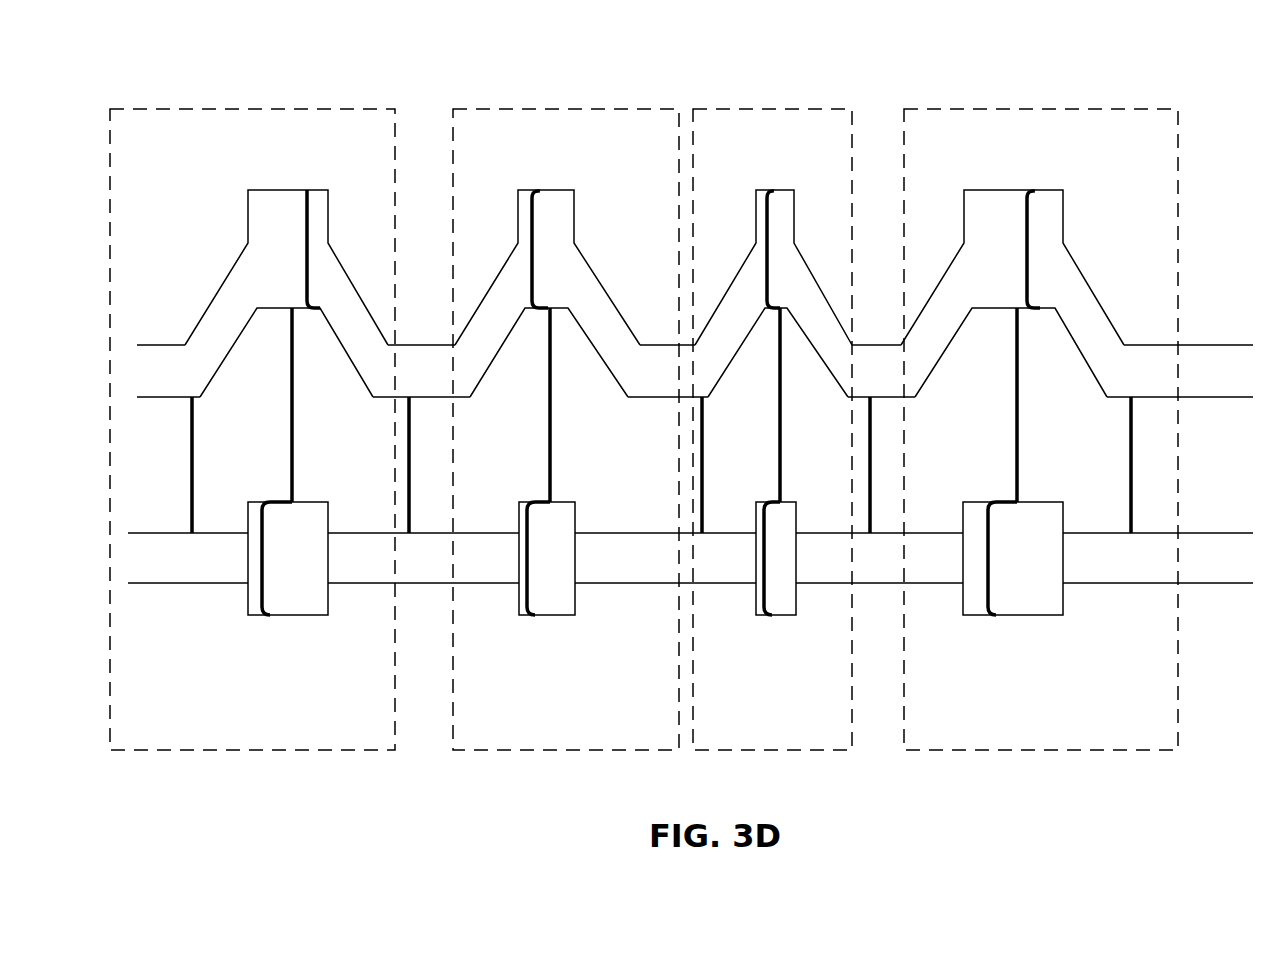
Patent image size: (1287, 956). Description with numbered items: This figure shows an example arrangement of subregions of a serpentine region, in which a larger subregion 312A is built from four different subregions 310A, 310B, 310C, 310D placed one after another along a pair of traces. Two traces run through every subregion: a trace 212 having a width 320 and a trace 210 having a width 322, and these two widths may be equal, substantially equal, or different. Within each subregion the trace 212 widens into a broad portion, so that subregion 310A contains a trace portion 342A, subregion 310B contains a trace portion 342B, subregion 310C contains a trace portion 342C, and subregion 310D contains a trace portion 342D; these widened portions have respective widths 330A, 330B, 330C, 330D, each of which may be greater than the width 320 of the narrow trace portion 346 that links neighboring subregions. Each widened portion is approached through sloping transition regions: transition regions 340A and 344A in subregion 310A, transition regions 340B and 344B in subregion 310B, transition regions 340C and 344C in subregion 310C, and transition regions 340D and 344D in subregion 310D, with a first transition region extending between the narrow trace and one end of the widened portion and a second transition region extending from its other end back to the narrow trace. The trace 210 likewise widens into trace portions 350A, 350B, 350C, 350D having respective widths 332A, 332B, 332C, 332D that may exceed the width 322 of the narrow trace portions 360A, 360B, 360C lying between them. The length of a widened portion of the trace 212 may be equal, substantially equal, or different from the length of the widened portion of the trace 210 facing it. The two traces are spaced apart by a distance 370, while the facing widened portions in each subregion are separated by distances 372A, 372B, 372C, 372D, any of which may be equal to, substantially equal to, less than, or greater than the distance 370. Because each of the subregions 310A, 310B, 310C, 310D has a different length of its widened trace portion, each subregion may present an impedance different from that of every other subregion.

The subregion 312A is at (140, 76).
The subregion 310A is at (252, 740).
The subregion 310B is at (595, 740).
The subregion 310C is at (836, 740).
The subregion 310D is at (1047, 740).
The width 320 is at (165, 345).
The width 322 is at (165, 533).
The width 330A is at (308, 240).
The width 330B is at (533, 260).
The width 330C is at (768, 260).
The width 330D is at (1028, 240).
The width 332A is at (263, 503).
The width 332B is at (529, 503).
The width 332C is at (767, 503).
The width 332D is at (990, 503).
The trace transition region 340A is at (185, 160).
The trace transition region 340B is at (462, 160).
The trace transition region 340C is at (693, 160).
The trace transition region 340D is at (903, 160).
The trace portion 342A is at (248, 160).
The trace portion 342B is at (518, 160).
The trace portion 342C is at (794, 160).
The trace portion 342D is at (965, 160).
The trace transition region 344A is at (375, 160).
The trace transition region 344B is at (574, 160).
The trace transition region 344C is at (794, 160).
The trace transition region 344D is at (1127, 160).
The trace portion 346 is at (375, 160).
The trace portion 350A is at (328, 659).
The trace portion 350B is at (575, 659).
The trace portion 350C is at (756, 659).
The trace portion 350D is at (963, 659).
The trace portion 360A is at (518, 659).
The trace portion 360B is at (756, 659).
The trace portion 360C is at (963, 659).
The distance 370 is at (191, 455).
The distance 372A is at (291, 395).
The distance 372B is at (549, 395).
The distance 372C is at (779, 395).
The distance 372D is at (1016, 395).
The trace 212 is at (1188, 345).
The trace 210 is at (1186, 583).